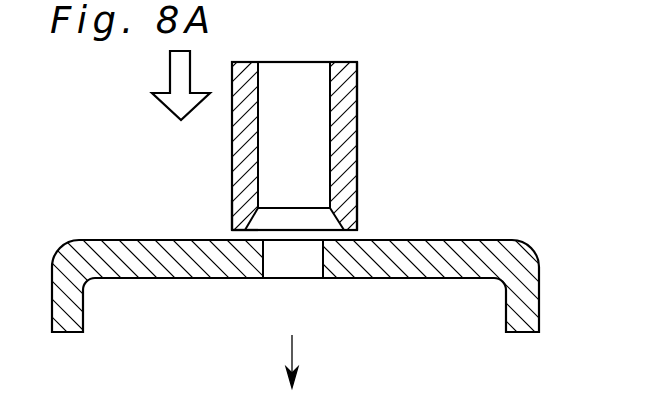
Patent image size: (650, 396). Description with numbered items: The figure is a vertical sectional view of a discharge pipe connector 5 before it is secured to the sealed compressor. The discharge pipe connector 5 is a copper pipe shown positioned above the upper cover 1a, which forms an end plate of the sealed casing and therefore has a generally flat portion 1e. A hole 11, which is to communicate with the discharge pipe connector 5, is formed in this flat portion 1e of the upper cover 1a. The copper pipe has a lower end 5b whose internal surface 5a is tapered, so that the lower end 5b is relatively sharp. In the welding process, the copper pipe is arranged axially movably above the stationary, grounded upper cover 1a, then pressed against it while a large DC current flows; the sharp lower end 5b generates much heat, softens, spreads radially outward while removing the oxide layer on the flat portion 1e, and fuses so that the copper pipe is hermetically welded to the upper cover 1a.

The upper cover 1a is at (123, 253).
The flat portion 1e is at (412, 240).
The discharge pipe connector 5 is at (345, 123).
The internal surface 5a is at (359, 203).
The lower end 5b is at (232, 228).
The hole 11 is at (285, 257).